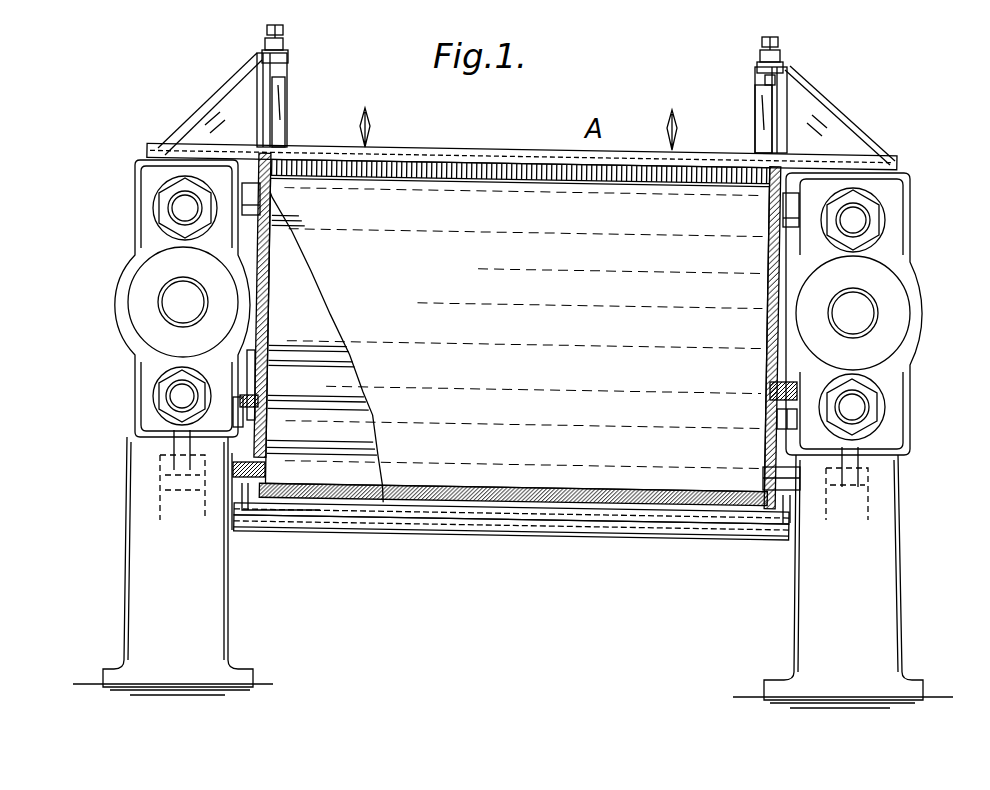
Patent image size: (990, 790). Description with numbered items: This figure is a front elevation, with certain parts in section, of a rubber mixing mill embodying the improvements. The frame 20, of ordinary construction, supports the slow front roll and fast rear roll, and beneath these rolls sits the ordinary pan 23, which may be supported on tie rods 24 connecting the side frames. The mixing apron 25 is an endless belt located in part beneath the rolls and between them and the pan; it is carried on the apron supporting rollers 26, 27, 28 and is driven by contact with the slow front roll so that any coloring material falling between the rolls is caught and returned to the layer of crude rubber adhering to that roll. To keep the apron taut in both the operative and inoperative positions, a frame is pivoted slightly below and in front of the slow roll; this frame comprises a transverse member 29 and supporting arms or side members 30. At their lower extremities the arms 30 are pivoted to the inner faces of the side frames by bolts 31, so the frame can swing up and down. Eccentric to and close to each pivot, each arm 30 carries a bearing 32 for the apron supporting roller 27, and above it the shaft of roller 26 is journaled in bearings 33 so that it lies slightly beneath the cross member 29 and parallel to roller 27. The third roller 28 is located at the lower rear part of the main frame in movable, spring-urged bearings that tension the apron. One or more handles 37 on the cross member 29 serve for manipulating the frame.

The frame 20 is at (513, 434).
The pan 23 is at (516, 528).
The tie rods 24 is at (410, 532).
The mixing apron 25 is at (517, 334).
The apron supporting roller 26 is at (283, 216).
The apron supporting roller 27 is at (323, 400).
The apron supporting roller 28 is at (312, 470).
The transverse member 29 is at (498, 147).
The supporting arms 30 is at (268, 262).
The bolts 31 is at (262, 410).
The bearing 32 is at (903, 378).
The bearings 33 is at (791, 228).
The handles 37 is at (371, 126).